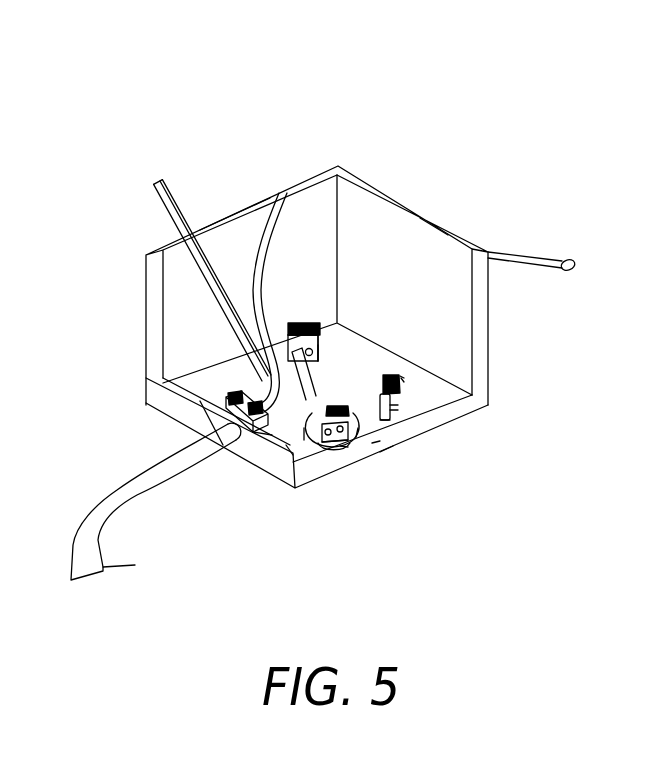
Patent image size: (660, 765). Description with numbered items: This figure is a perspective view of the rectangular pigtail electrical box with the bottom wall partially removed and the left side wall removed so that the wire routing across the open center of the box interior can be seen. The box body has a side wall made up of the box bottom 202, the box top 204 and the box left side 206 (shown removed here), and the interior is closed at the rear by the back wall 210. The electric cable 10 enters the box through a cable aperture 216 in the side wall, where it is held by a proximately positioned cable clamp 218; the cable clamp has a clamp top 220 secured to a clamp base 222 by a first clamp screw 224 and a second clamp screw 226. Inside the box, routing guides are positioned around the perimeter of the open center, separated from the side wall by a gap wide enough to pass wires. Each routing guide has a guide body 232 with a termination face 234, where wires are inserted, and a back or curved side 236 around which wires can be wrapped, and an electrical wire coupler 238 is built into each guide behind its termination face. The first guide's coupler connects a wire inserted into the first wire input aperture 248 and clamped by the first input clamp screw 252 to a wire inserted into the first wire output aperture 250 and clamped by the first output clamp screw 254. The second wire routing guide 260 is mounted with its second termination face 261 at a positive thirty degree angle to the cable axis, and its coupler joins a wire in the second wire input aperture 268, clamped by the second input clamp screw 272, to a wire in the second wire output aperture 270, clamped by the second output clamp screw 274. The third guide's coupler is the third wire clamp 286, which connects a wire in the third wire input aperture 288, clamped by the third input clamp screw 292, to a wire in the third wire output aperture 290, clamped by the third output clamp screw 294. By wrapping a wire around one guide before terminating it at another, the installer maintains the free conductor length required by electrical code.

The electric cable 10 is at (138, 474).
The box bottom 202 is at (167, 403).
The box top 204 is at (448, 235).
The box left side 206 is at (268, 198).
The back wall 210 is at (393, 446).
The cable aperture 216 is at (223, 445).
The cable clamp 218 is at (229, 393).
The clamp top 220 is at (286, 445).
The clamp base 222 is at (272, 436).
The first clamp screw 224 is at (259, 374).
The second clamp screw 226 is at (252, 340).
The guide body 232 is at (322, 346).
The termination face 234 is at (321, 356).
The curved side 236 is at (403, 409).
The electrical wire coupler 238 is at (289, 323).
The first wire input aperture 248 is at (284, 194).
The first wire output aperture 250 is at (405, 377).
The first input clamp screw 252 is at (308, 334).
The first output clamp screw 254 is at (320, 340).
The second wire routing guide 260 is at (400, 396).
The second termination face 261 is at (380, 442).
The second wire input aperture 268 is at (396, 405).
The second wire output aperture 270 is at (374, 406).
The second input clamp screw 272 is at (402, 381).
The second output clamp screw 274 is at (406, 376).
The third wire clamp 286 is at (347, 448).
The third wire input aperture 288 is at (330, 449).
The third wire output aperture 290 is at (360, 447).
The third input clamp screw 292 is at (305, 440).
The third output clamp screw 294 is at (357, 438).